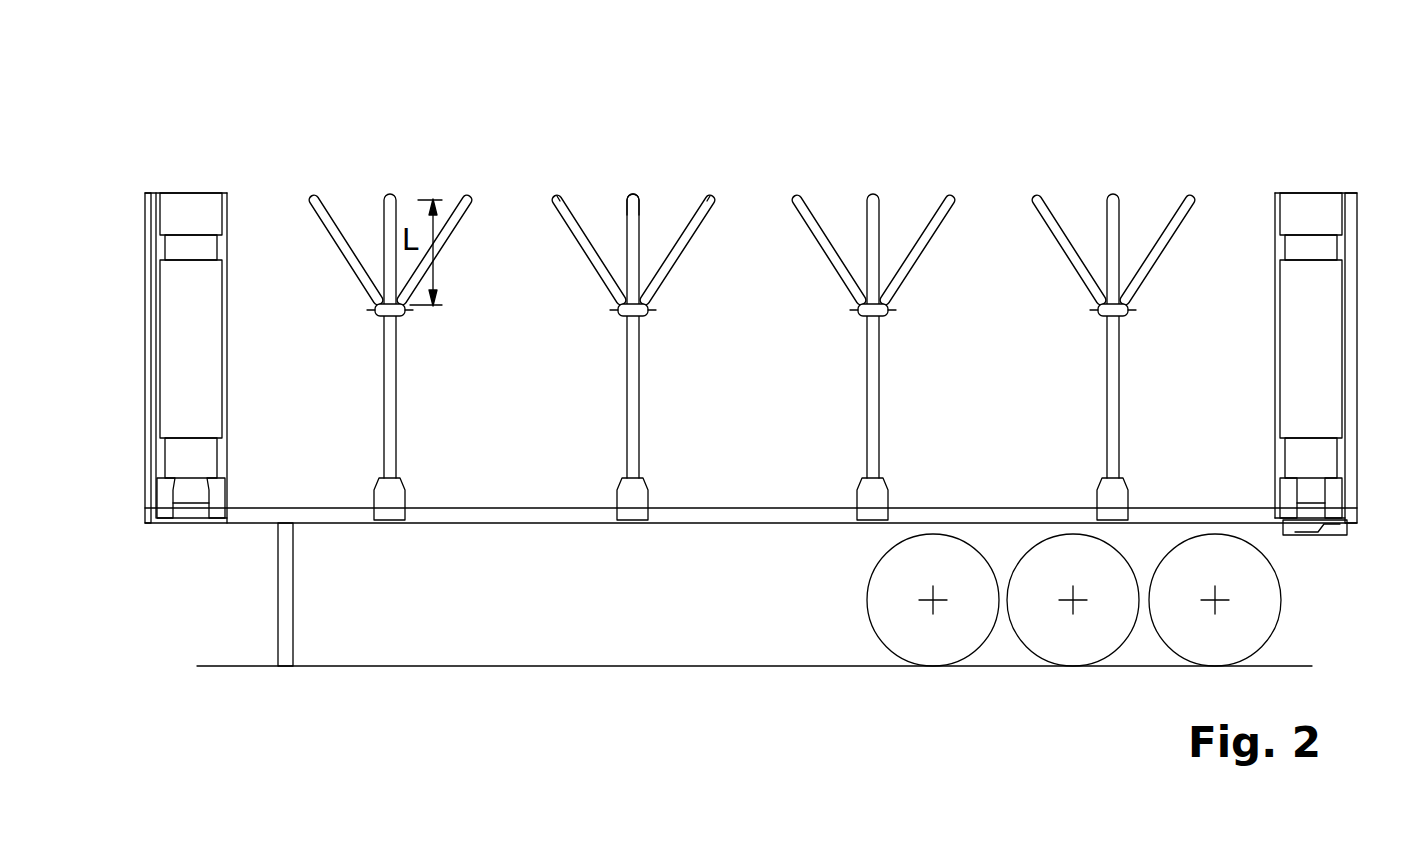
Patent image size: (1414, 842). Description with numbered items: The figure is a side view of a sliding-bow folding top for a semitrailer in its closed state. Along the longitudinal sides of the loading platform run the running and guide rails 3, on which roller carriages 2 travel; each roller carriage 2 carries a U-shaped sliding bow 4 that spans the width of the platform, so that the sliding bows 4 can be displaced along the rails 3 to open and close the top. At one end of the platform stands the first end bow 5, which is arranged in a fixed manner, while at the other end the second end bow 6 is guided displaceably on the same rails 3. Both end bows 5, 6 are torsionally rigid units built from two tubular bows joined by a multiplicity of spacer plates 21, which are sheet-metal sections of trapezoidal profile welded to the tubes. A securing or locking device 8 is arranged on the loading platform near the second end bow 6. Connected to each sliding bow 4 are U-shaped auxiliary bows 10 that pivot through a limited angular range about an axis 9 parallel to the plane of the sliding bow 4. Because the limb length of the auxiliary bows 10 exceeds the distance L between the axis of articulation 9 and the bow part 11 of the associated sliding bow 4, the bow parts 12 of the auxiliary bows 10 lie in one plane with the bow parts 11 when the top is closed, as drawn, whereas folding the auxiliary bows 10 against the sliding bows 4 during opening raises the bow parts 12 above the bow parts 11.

The roller carriage 2 is at (635, 500).
The running and guide rail 3 is at (470, 516).
The sliding bow 4 is at (635, 402).
The first end bow 5 is at (198, 184).
The second end bow 6 is at (1321, 184).
The securing or locking device 8 is at (1322, 542).
The axis of articulation 9 is at (618, 308).
The auxiliary bow 10 is at (583, 237).
The bow part of sliding bow 11 is at (634, 195).
The bow part of auxiliary bow 12 is at (555, 197).
The spacer plate 21 is at (205, 315).